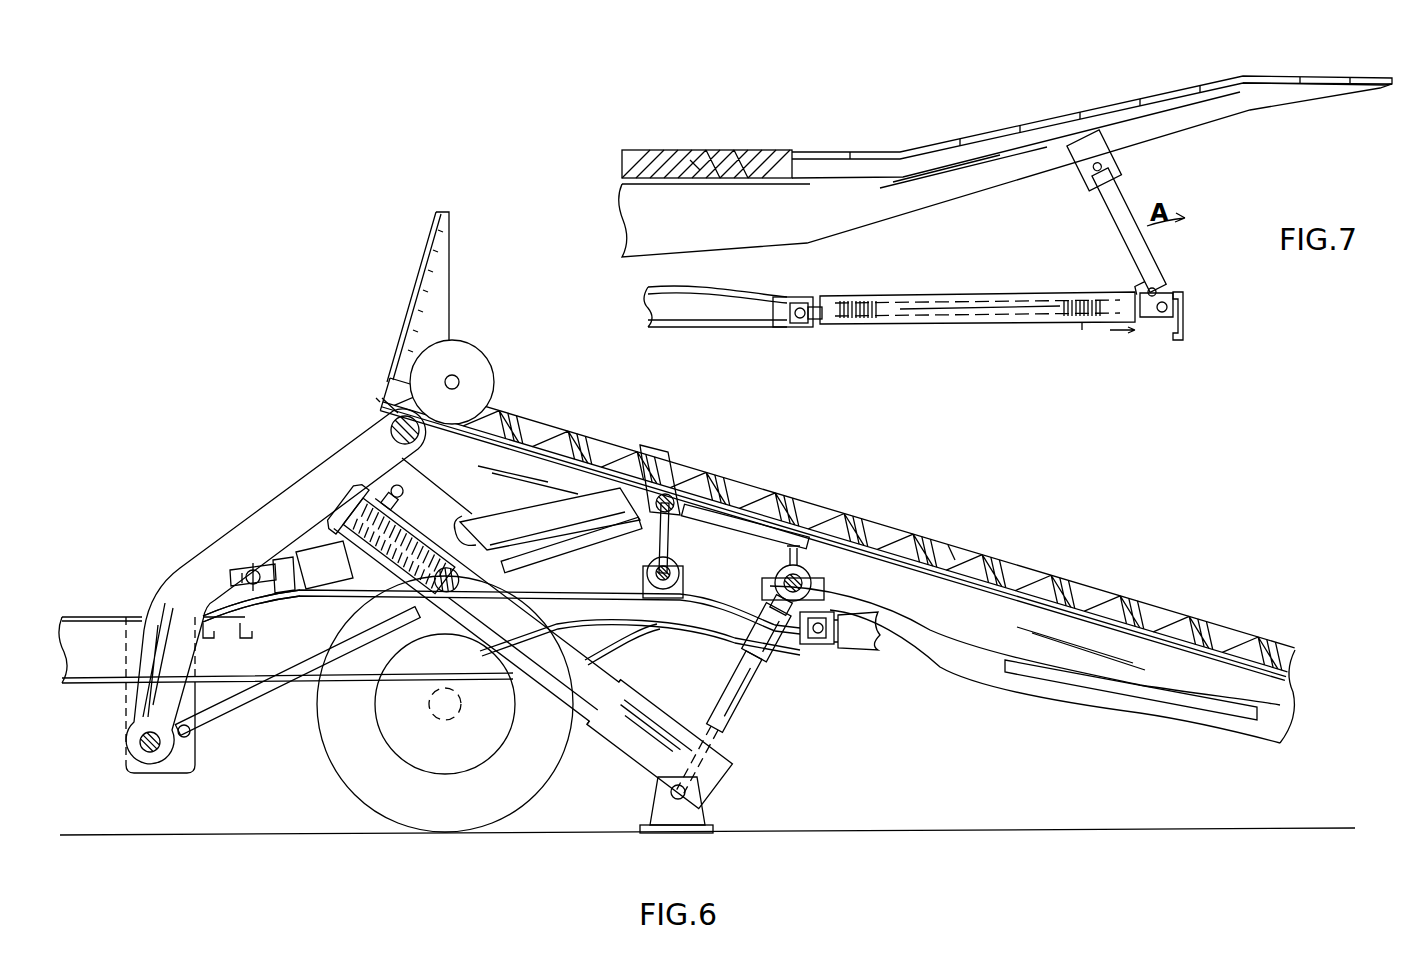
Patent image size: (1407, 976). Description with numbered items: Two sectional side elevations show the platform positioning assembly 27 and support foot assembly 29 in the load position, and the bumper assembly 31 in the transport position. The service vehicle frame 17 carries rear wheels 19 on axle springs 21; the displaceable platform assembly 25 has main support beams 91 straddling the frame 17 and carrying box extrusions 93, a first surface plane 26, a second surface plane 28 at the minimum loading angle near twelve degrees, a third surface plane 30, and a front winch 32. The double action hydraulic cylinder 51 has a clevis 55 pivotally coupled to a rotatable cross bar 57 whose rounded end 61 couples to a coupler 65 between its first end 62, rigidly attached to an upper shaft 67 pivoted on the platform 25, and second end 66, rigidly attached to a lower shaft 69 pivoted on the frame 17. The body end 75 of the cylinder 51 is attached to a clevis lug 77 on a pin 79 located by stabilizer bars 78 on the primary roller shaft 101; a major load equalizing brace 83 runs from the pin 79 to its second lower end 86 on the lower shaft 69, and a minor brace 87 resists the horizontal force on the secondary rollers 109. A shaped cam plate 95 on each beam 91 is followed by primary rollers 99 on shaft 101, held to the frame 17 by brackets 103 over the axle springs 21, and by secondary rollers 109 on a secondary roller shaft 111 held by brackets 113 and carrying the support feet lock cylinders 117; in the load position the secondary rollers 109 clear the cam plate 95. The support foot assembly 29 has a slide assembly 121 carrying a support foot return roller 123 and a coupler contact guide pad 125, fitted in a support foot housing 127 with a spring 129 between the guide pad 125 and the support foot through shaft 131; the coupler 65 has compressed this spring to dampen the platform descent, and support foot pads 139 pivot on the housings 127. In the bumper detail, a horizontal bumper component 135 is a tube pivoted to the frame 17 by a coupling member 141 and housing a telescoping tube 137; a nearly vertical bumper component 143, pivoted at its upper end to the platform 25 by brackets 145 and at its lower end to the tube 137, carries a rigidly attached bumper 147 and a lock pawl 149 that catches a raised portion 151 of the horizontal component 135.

In FIG. 6, the service vehicle frame 17 is at (100, 683).
In FIG. 7, the service vehicle frame 17 is at (732, 333).
In FIG. 6, the rear wheels 19 is at (340, 765).
In FIG. 6, the axle springs 21 is at (365, 690).
In FIG. 6, the displaceable platform assembly 25 is at (837, 446).
In FIG. 7, the displaceable platform assembly 25 is at (1024, 134).
In FIG. 7, the first surface plane 26 is at (660, 140).
In FIG. 6, the platform positioning assembly 27 is at (253, 589).
In FIG. 7, the second surface plane 28 is at (1108, 105).
In FIG. 6, the support foot assembly 29 is at (522, 640).
In FIG. 7, the third surface plane 30 is at (1270, 75).
In FIG. 7, the bumper assembly 31 is at (980, 307).
In FIG. 6, the winch 32 is at (478, 360).
In FIG. 6, the double action hydraulic cylinder 51 is at (562, 515).
In FIG. 6, the clevis 55 is at (275, 598).
In FIG. 6, the rotatable cross bar 57 is at (233, 578).
In FIG. 6, the rounded end 61 is at (248, 570).
In FIG. 6, the coupler first end 62 is at (385, 406).
In FIG. 6, the coupler 65 is at (342, 468).
In FIG. 6, the coupler second end 66 is at (138, 740).
In FIG. 6, the upper shaft 67 is at (392, 430).
In FIG. 6, the lower shaft 69 is at (152, 754).
In FIG. 6, the body end 75 is at (636, 535).
In FIG. 6, the clevis lug 77 is at (650, 470).
In FIG. 6, the stabilizer bars 78 is at (681, 538).
In FIG. 6, the pin 79 is at (672, 492).
In FIG. 6, the brace 83 is at (235, 712).
In FIG. 6, the second lower end 86 is at (188, 740).
In FIG. 6, the brace 87 is at (730, 548).
In FIG. 6, the platform main support beams 91 is at (571, 430).
In FIG. 6, the box extrusions 93 is at (1005, 580).
In FIG. 7, the box extrusions 93 is at (748, 158).
In FIG. 6, the cam plate 95 is at (925, 625).
In FIG. 6, the primary rollers 99 is at (675, 560).
In FIG. 6, the primary roller shaft 101 is at (680, 584).
In FIG. 6, the brackets 103 is at (643, 582).
In FIG. 6, the secondary rollers 109 is at (808, 578).
In FIG. 6, the secondary roller shaft 111 is at (745, 636).
In FIG. 6, the brackets 113 is at (816, 595).
In FIG. 6, the support feet lock cylinders 117 is at (760, 652).
In FIG. 6, the slide assembly 121 is at (393, 496).
In FIG. 6, the support foot return roller 123 is at (527, 645).
In FIG. 6, the coupler contact guide pad 125 is at (399, 546).
In FIG. 6, the support foot housing 127 is at (644, 732).
In FIG. 6, the spring 129 is at (447, 580).
In FIG. 6, the support foot through shaft 131 is at (470, 556).
In FIG. 6, the horizontal bumper component 135 is at (862, 652).
In FIG. 7, the horizontal bumper component 135 is at (977, 312).
In FIG. 7, the telescoping tube 137 is at (1158, 318).
In FIG. 6, the support foot pads 139 is at (695, 812).
In FIG. 6, the coupling member 141 is at (824, 645).
In FIG. 7, the coupling member 141 is at (810, 328).
In FIG. 7, the vertical bumper component 143 is at (1118, 214).
In FIG. 7, the brackets 145 is at (1094, 160).
In FIG. 7, the bumper 147 is at (1186, 305).
In FIG. 7, the lock pawl 149 is at (1140, 288).
In FIG. 7, the raised portion 151 is at (1156, 285).